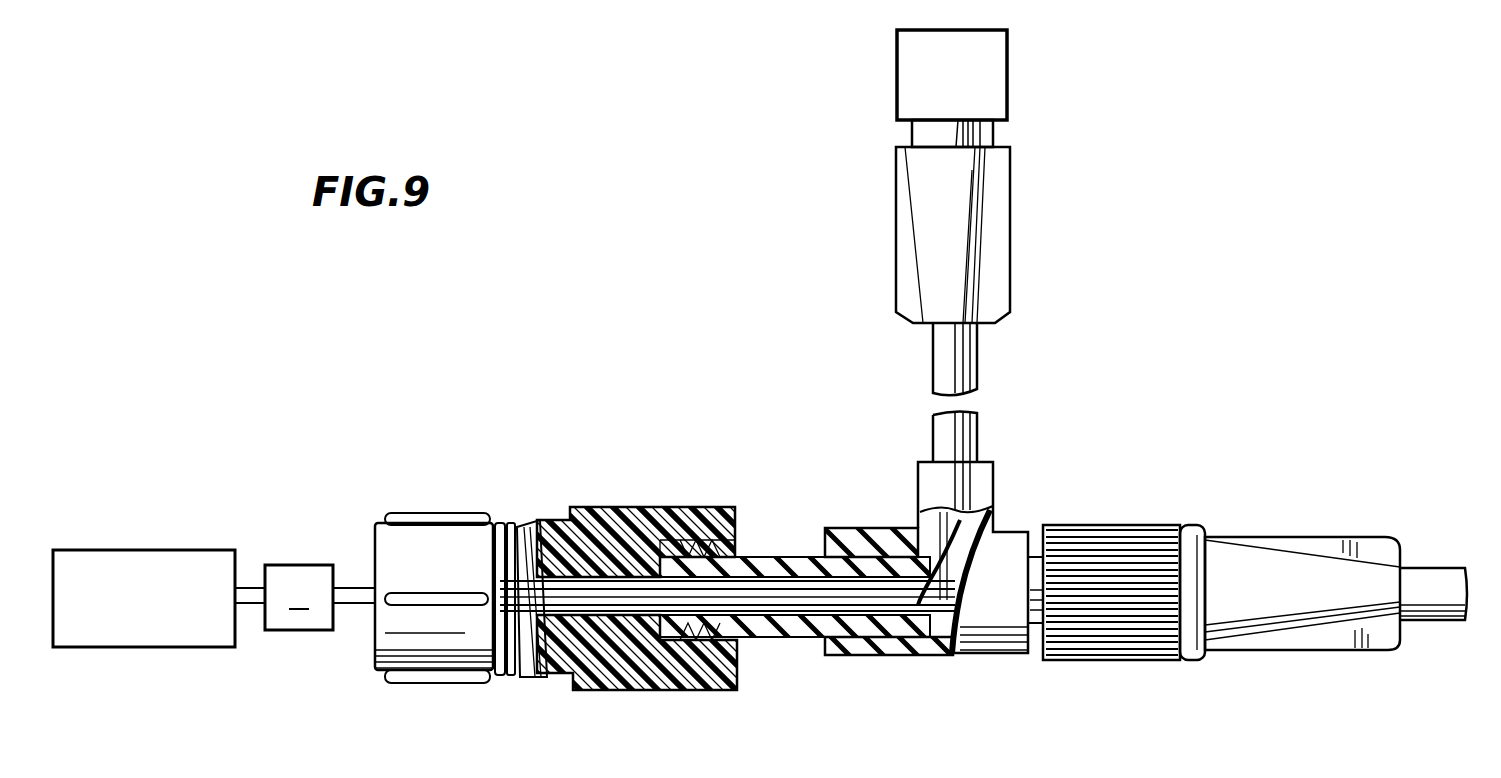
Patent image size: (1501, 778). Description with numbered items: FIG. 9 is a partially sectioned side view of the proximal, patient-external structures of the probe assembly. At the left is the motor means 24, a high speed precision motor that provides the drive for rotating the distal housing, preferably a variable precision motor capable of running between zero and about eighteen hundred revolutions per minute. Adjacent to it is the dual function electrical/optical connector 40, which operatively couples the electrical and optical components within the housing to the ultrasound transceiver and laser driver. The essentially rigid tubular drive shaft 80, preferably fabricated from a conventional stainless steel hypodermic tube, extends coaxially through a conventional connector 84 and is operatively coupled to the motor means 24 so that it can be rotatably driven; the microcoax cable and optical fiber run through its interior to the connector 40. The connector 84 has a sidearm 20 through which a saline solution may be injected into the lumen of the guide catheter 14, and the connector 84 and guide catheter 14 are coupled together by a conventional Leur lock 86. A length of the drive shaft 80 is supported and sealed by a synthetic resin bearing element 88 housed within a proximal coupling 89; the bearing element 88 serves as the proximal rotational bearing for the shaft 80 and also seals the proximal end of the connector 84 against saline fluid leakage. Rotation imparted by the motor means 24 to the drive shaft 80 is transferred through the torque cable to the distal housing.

The guide catheter 14 is at (1435, 572).
The side arm connector 20 is at (980, 360).
The motor means 24 is at (197, 637).
The dual function electrical/optical connector 40 is at (292, 572).
The tubular drive shaft 80 is at (790, 597).
The connector 84 is at (865, 645).
The Leur lock 86 is at (1093, 650).
The synthetic resin bearing element 88 is at (542, 547).
The proximal coupling 89 is at (658, 507).